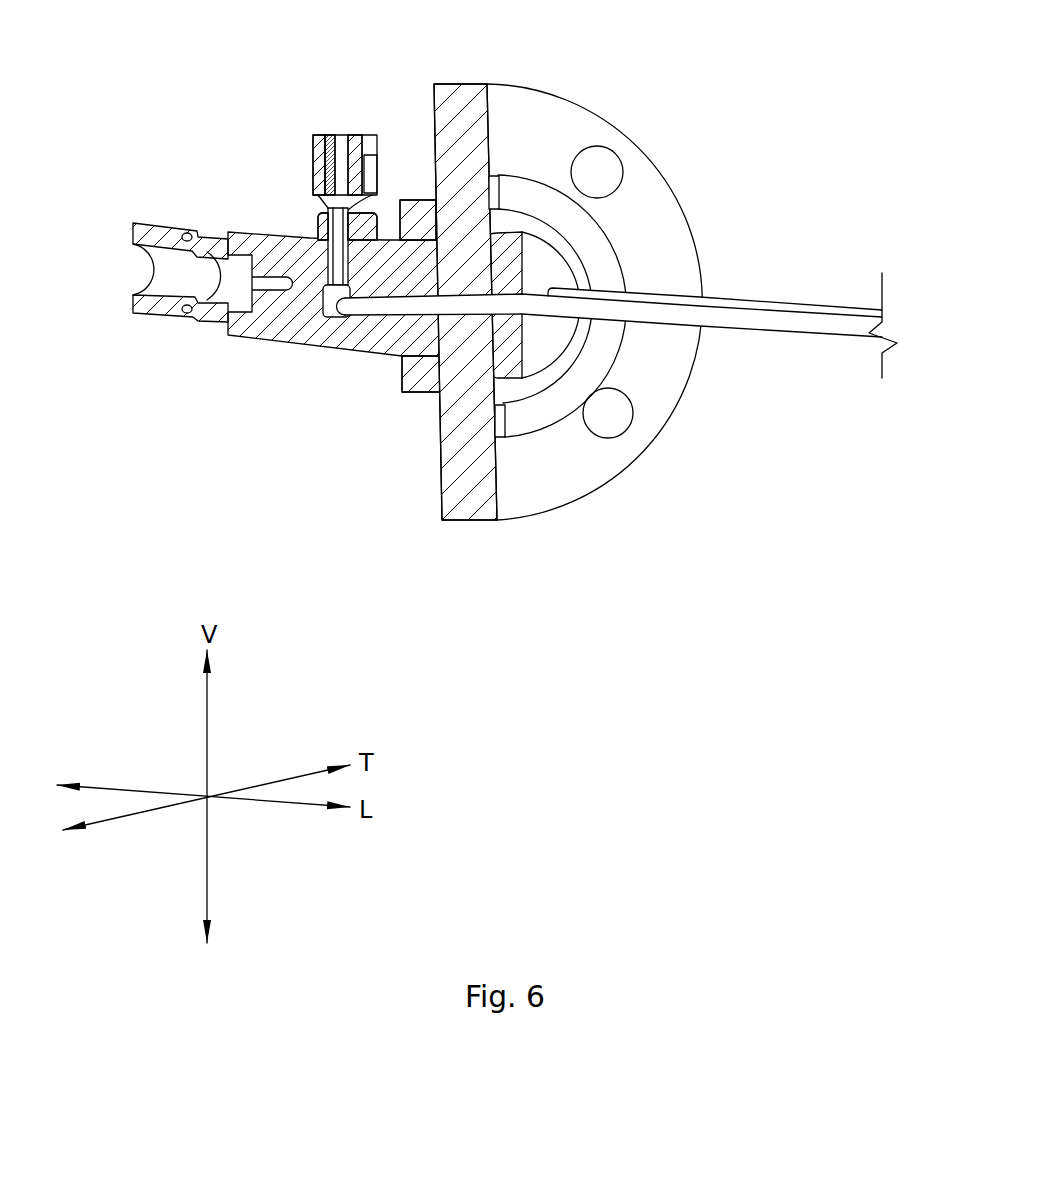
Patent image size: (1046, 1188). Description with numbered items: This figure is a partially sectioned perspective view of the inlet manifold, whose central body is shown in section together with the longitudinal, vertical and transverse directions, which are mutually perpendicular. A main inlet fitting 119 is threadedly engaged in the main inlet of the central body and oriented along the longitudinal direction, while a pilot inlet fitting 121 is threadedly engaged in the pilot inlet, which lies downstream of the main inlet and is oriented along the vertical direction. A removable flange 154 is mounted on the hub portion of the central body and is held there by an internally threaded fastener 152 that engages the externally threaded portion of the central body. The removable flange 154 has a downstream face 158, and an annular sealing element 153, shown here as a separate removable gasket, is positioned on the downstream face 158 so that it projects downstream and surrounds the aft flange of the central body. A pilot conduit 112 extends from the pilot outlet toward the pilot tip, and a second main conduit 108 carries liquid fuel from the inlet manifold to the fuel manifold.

The second main conduit 108 is at (797, 305).
The pilot conduit 112 is at (753, 324).
The main inlet fitting 119 is at (152, 232).
The pilot inlet fitting 121 is at (316, 138).
The internally threaded fastener 152 is at (425, 380).
The annular sealing element 153 is at (587, 252).
The removable flange 154 is at (453, 103).
The downstream face 158 is at (547, 133).